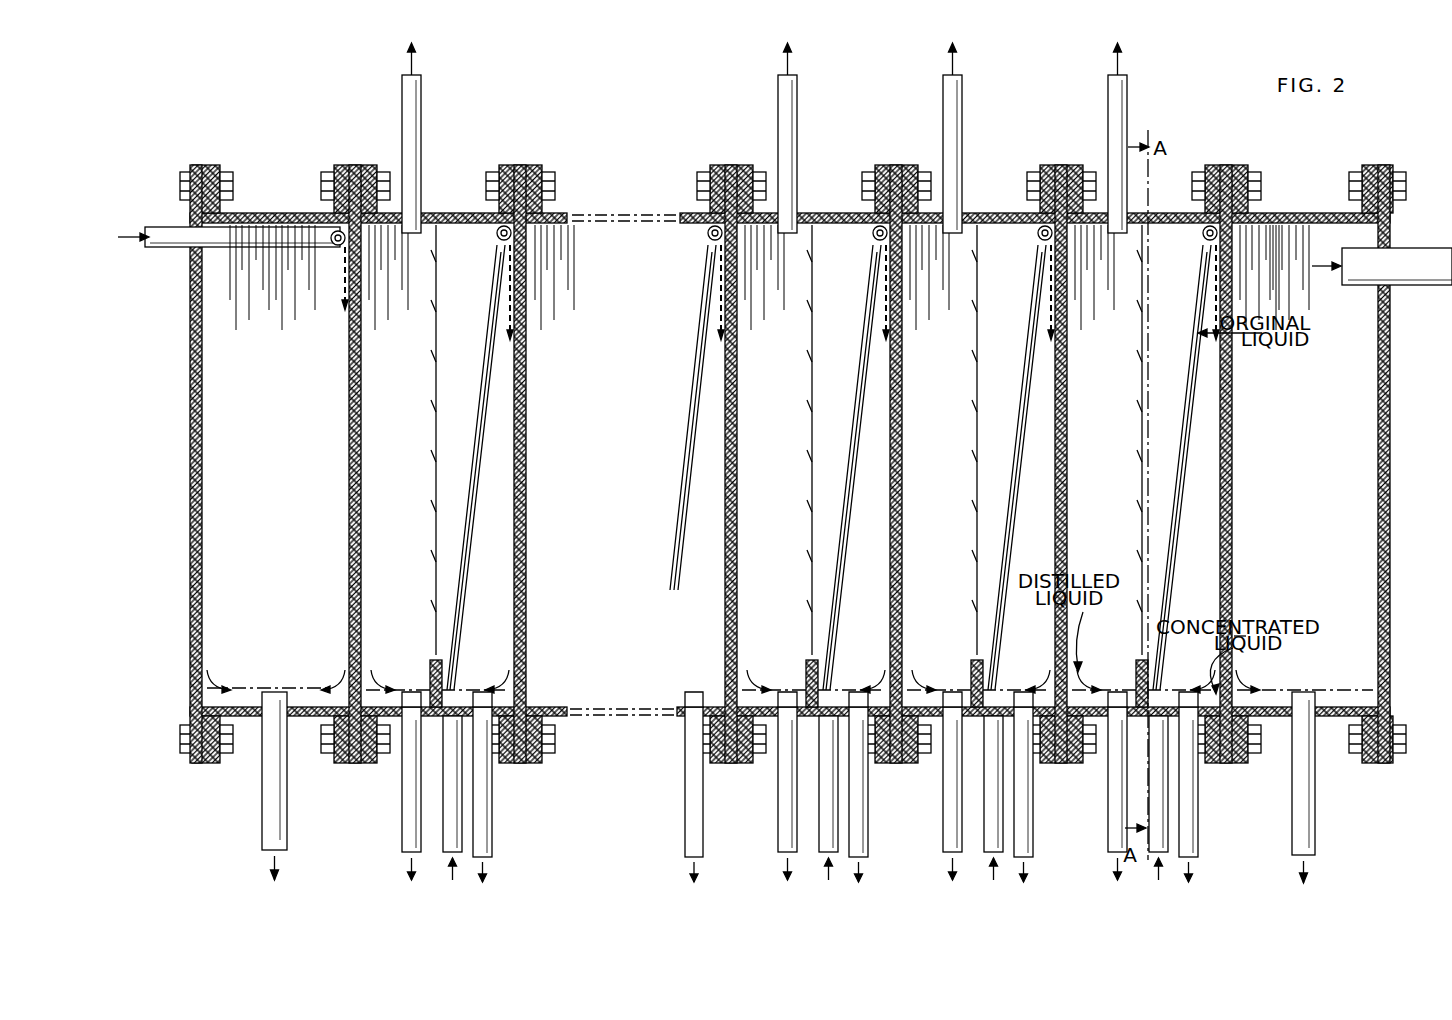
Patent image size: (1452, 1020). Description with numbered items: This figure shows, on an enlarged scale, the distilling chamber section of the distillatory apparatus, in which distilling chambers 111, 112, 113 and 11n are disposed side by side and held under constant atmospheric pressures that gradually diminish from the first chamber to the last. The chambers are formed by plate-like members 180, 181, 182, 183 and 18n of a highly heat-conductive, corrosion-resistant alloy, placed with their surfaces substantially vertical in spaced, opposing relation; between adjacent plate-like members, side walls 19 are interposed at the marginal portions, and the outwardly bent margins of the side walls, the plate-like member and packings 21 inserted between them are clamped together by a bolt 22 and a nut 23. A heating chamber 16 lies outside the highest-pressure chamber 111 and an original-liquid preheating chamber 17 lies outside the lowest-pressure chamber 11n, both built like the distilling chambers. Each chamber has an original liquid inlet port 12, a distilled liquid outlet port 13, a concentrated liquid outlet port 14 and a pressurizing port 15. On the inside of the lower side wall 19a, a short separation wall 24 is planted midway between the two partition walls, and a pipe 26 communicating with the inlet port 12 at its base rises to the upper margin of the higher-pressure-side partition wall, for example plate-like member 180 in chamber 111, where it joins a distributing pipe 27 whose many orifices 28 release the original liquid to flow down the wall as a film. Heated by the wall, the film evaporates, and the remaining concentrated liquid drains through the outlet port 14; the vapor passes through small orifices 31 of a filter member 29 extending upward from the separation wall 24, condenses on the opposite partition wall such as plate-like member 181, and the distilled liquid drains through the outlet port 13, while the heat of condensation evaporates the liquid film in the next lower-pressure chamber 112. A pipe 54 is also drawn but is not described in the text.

The distilling chamber 11n is at (386, 338).
The distilling chamber 113 is at (766, 338).
The distilling chamber 112 is at (929, 338).
The distilling chamber 111 is at (1092, 338).
The original liquid inlet port 12 is at (837, 798).
The distilled liquid outlet port 13 is at (743, 793).
The concentrated liquid outlet port 14 is at (703, 838).
The pressurizing port 15 is at (784, 138).
The heating chamber 16 is at (1288, 449).
The original-liquid preheating chamber 17 is at (260, 455).
The plate-like member 18n is at (364, 400).
The plate-like member 183 is at (740, 402).
The plate-like member 182 is at (905, 402).
The plate-like member 181 is at (1070, 402).
The plate-like member 180 is at (1235, 402).
The side wall 19 is at (790, 447).
The lower side wall 19a is at (784, 678).
The packing 21 is at (1238, 165).
The bolt 22 is at (1200, 172).
The nut 23 is at (1253, 172).
The separation wall 24 is at (768, 663).
The pipe 26 is at (686, 555).
The distributing pipe 27 is at (837, 244).
The orifices 28 is at (838, 292).
The filter member 29 is at (769, 440).
The small orifices 31 is at (767, 431).
The outlet pipe 54 is at (262, 812).